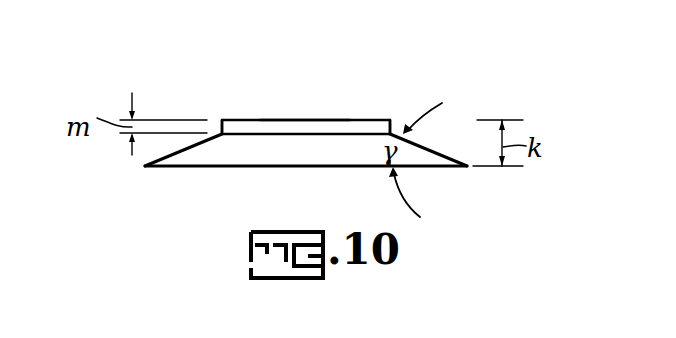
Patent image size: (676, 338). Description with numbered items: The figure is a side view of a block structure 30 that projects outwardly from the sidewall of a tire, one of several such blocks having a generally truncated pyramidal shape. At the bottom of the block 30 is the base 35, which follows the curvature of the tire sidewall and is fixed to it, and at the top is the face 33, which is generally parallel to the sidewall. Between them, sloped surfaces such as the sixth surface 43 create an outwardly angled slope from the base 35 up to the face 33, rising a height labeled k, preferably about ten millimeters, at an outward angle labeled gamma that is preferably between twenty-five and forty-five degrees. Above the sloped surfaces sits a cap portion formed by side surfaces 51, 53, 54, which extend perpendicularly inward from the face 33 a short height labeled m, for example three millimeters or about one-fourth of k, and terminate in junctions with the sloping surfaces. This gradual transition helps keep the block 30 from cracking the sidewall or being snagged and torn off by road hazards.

The block structure 30 is at (408, 74).
The face 33 is at (281, 118).
The base 35 is at (298, 168).
The sixth surface 43 is at (254, 153).
The side surface 51 is at (392, 118).
The side surface 53 is at (220, 118).
The side surface 54 is at (332, 128).